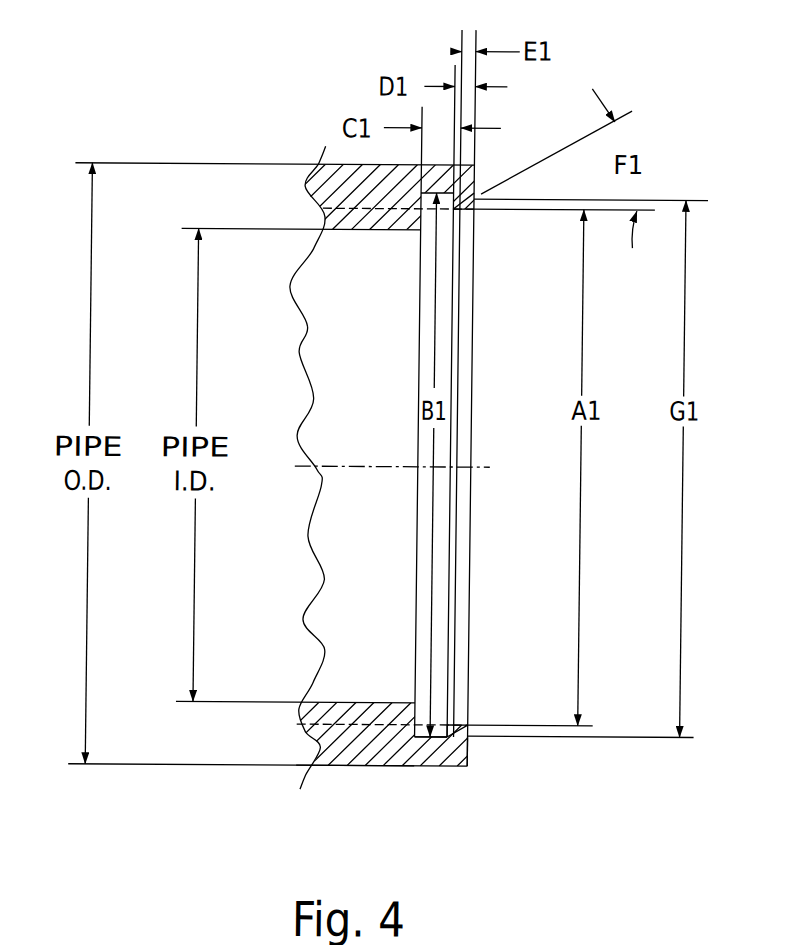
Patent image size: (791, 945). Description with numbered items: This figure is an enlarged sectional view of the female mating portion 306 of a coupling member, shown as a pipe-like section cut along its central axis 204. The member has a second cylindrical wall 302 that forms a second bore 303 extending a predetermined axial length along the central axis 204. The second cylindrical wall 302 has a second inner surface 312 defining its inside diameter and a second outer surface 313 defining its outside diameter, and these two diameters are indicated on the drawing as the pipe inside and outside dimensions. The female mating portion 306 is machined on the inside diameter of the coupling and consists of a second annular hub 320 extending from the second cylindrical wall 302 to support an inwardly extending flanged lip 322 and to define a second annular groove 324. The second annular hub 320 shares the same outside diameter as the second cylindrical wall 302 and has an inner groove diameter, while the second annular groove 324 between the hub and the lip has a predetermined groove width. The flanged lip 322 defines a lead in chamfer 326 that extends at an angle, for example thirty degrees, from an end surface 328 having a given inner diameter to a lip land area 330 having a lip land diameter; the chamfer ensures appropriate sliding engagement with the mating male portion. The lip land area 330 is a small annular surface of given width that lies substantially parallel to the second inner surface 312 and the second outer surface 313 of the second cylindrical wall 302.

The central axis 204 is at (353, 468).
The second cylindrical wall 302 is at (337, 175).
The second bore 303 is at (341, 300).
The female mating portion 306 is at (334, 90).
The second inner surface 312 is at (364, 703).
The second outer surface 313 is at (339, 722).
The second annular hub 320 is at (444, 746).
The flanged lip 322 is at (461, 738).
The second annular groove 324 is at (471, 748).
The lead in chamfer 326 is at (466, 205).
The end surface 328 is at (456, 743).
The lip land area 330 is at (452, 730).